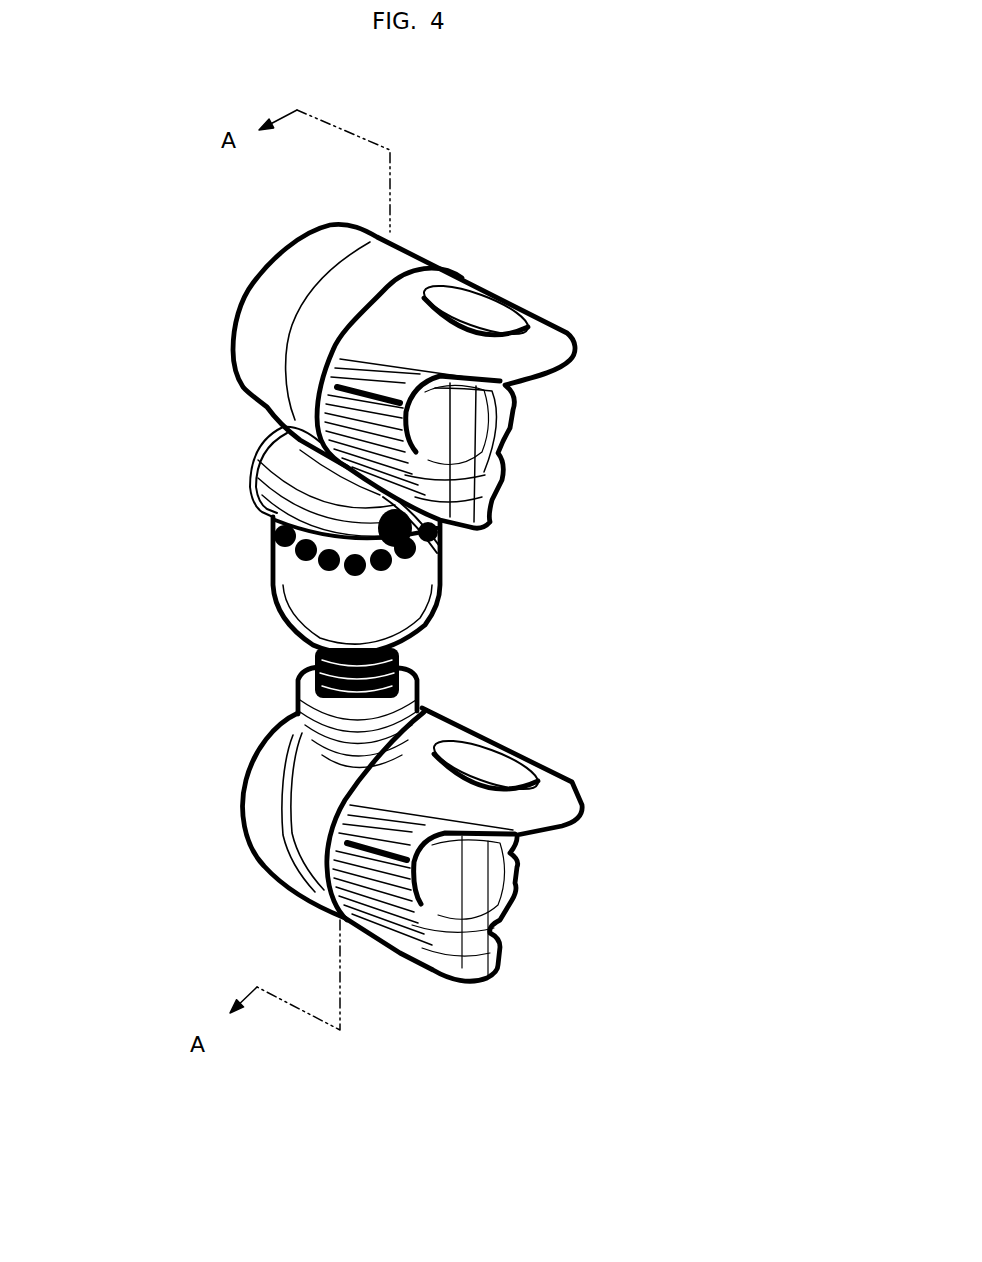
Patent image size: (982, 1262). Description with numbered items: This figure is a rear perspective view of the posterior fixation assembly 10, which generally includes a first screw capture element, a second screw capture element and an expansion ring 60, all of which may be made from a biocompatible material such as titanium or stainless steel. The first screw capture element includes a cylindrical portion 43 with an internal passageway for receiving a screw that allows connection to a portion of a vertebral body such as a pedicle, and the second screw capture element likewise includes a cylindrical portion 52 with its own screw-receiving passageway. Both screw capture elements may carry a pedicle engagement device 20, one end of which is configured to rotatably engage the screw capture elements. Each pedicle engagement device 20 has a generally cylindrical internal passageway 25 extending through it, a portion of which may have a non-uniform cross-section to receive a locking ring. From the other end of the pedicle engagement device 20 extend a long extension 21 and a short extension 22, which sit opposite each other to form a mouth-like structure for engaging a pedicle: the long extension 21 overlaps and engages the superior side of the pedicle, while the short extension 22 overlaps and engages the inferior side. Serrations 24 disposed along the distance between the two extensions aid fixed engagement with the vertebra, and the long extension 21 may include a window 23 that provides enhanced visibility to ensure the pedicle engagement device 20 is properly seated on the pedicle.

The posterior fixation assembly 10 is at (693, 564).
The pedicle engagement device 20 is at (546, 253).
The long extension 21 is at (538, 793).
The short extension 22 is at (503, 956).
The window 23 is at (484, 770).
The serrations 24 is at (517, 870).
The internal passageway 25 is at (453, 410).
The cylindrical portion 43 is at (268, 300).
The cylindrical portion 52 is at (267, 813).
The expansion ring 60 is at (214, 606).